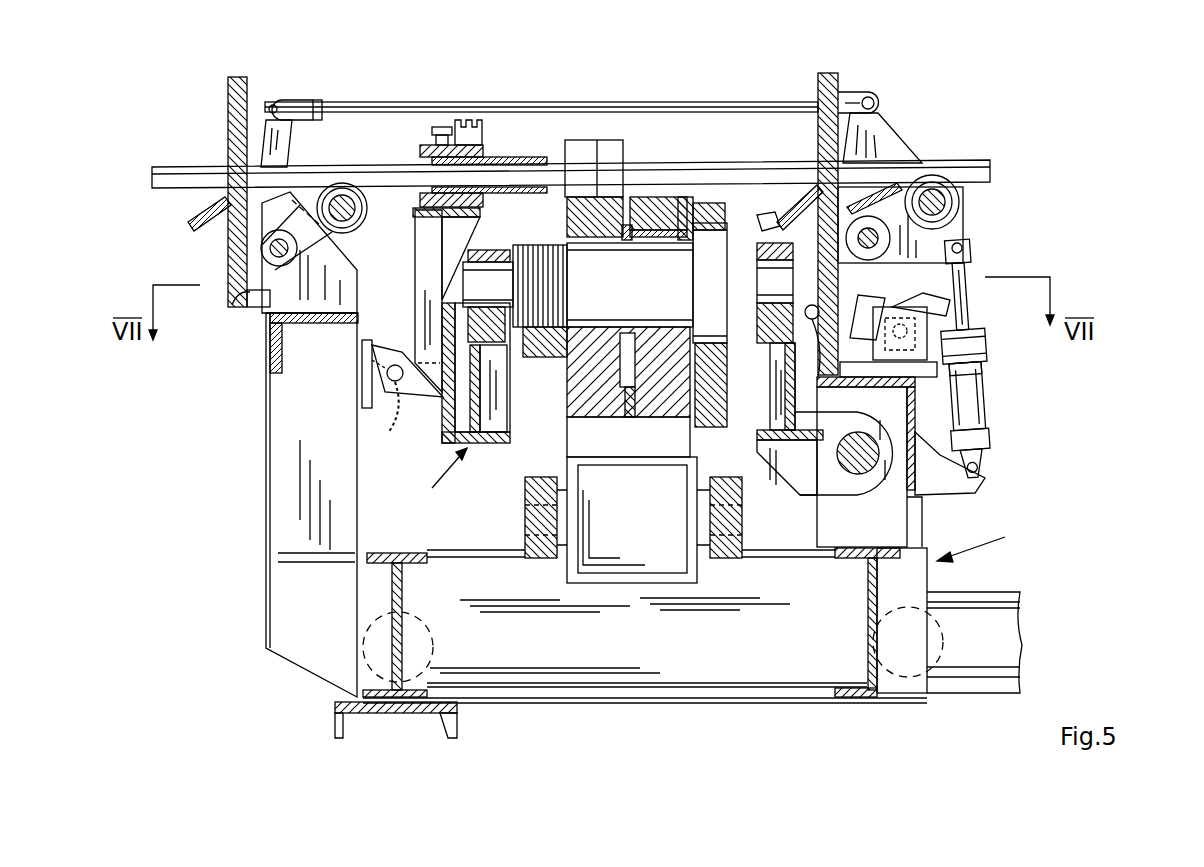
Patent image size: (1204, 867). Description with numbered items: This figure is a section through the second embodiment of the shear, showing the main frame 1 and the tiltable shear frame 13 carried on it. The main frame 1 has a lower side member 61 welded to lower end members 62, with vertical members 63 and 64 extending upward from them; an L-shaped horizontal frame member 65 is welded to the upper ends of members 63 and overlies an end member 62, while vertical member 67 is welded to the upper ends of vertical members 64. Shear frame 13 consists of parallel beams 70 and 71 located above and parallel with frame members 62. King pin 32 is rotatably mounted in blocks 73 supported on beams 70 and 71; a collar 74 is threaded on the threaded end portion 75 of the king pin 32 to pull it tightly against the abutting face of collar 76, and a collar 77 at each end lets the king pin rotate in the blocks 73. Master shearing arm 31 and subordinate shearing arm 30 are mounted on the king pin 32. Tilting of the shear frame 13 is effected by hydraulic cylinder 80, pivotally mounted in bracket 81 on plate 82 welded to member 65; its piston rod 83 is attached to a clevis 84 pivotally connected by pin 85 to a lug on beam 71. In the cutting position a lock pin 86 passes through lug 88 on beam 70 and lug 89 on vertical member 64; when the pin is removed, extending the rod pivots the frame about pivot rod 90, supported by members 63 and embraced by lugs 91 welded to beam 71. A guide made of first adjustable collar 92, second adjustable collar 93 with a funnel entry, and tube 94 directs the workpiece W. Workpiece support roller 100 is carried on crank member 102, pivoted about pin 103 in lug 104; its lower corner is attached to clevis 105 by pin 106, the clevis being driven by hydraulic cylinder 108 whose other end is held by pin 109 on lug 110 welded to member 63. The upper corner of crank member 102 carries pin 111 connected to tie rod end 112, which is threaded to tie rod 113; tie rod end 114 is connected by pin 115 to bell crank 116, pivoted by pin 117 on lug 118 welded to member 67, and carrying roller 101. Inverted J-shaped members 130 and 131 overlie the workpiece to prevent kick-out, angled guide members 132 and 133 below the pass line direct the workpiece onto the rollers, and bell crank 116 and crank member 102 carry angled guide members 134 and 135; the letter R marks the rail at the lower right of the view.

The main frame 1 is at (980, 542).
The shear frame 13 is at (433, 483).
The subordinate shearing arm 30 is at (657, 197).
The master shearing arm 31 is at (578, 412).
The king pin 32 is at (640, 298).
The lower side member 61 is at (910, 592).
The lower end member 62 is at (338, 718).
The vertical member 63 is at (908, 522).
The vertical member 64 is at (290, 388).
The L-shaped horizontal frame member 65 is at (974, 395).
The vertical member 67 is at (245, 305).
The beam 70 is at (490, 438).
The beam 71 is at (778, 394).
The block 73 is at (485, 256).
The collar 74 is at (548, 357).
The threaded end portion 75 is at (548, 284).
The collar 76 is at (686, 197).
The collar 77 is at (466, 266).
The hydraulic cylinder 80 is at (975, 358).
The bracket 81 is at (979, 342).
The plate 82 is at (974, 375).
The piston rod 83 is at (852, 318).
The clevis 84 is at (877, 426).
The pin 85 is at (805, 308).
The lock pin 86 is at (388, 372).
The lug 88 is at (420, 398).
The lug 89 is at (380, 395).
The pivot rod 90 is at (850, 462).
The lug 91 is at (785, 470).
The first adjustable collar 92 is at (482, 150).
The second adjustable collar 93 is at (435, 145).
The tube 94 is at (515, 157).
The workpiece support roller 100 is at (960, 196).
The workpiece support roller 101 is at (360, 222).
The crank member 102 is at (892, 135).
The pin 103 is at (890, 238).
The lug 104 is at (766, 216).
The clevis 105 is at (950, 285).
The pin 106 is at (970, 248).
The hydraulic cylinder 108 is at (977, 430).
The pin 109 is at (964, 468).
The lug 110 is at (955, 482).
The pin 111 is at (876, 100).
The tie rod end 112 is at (850, 92).
The tie rod 113 is at (640, 102).
The tie rod end 114 is at (318, 100).
The pin 115 is at (276, 100).
The bell crank 116 is at (290, 140).
The pin 117 is at (262, 252).
The lug 118 is at (268, 312).
The inverted J-shaped member 130 is at (827, 73).
The inverted J-shaped member 131 is at (228, 94).
The angled guide member 132 is at (190, 222).
The angled guide member 133 is at (800, 195).
The angled guide member 134 is at (276, 197).
The angled guide member 135 is at (900, 185).
The workpiece W is at (152, 172).
The rail R is at (1000, 655).